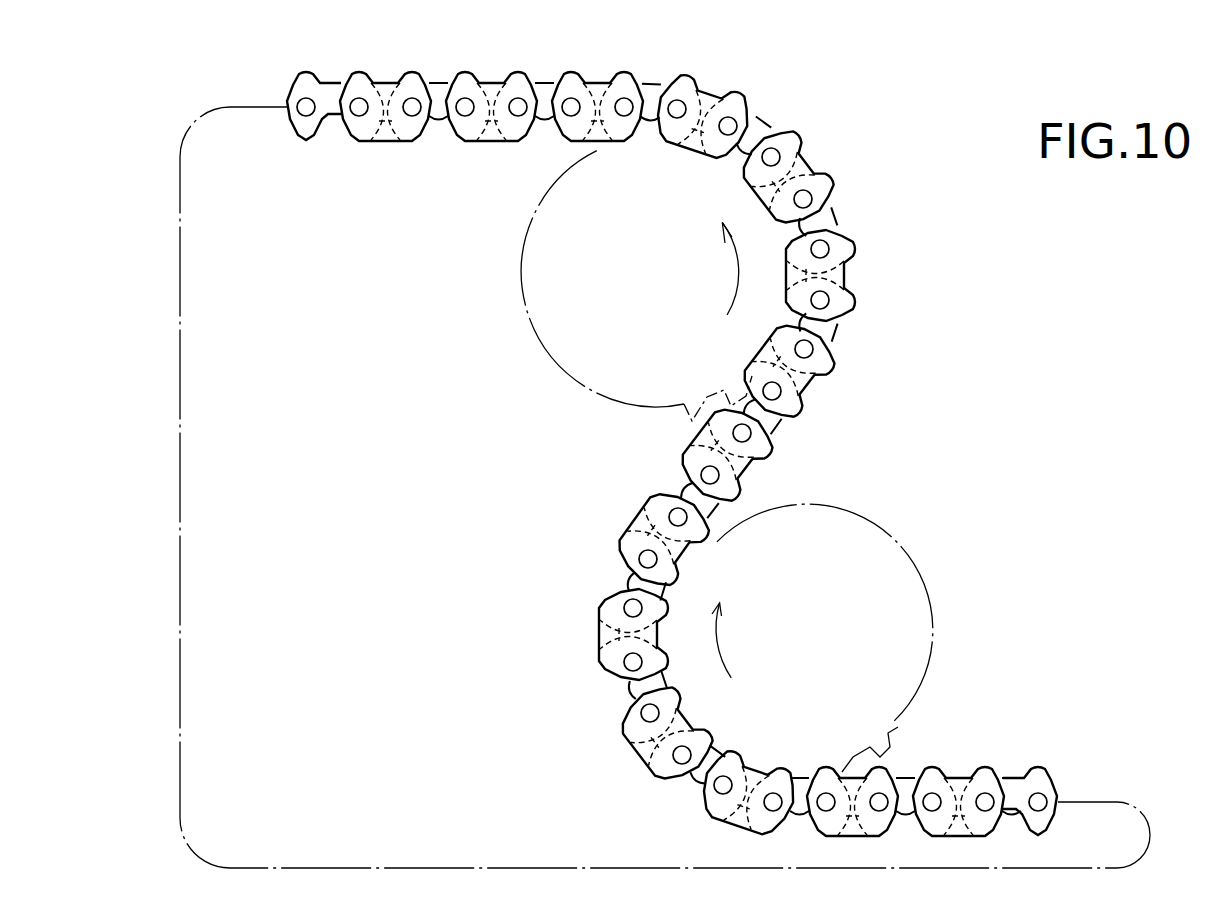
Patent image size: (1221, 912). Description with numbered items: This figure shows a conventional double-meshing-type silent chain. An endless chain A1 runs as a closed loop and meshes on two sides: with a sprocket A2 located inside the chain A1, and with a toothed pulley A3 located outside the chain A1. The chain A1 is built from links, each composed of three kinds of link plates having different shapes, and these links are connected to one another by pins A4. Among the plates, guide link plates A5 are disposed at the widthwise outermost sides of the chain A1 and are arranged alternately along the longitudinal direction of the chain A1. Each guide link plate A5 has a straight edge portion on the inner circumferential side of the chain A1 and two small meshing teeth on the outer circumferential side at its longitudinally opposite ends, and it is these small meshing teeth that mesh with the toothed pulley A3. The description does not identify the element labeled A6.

The endless chain A1 is at (672, 427).
The sprocket A2 is at (541, 326).
The toothed pulley A3 is at (920, 586).
The pin A4 is at (807, 192).
The guide link plate A5 is at (386, 128).
The outer link plate A6 is at (328, 82).